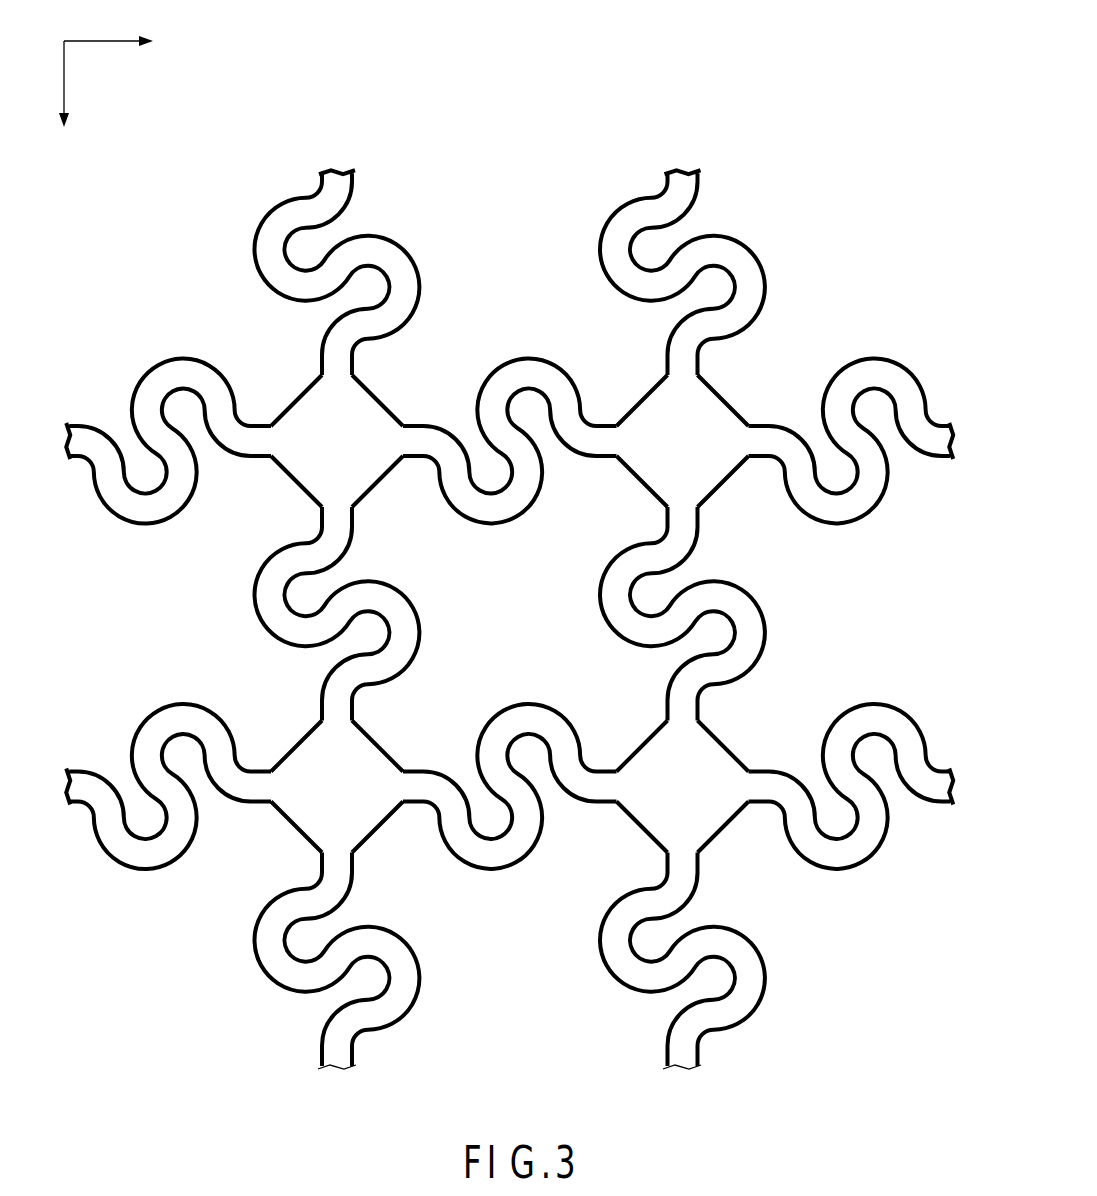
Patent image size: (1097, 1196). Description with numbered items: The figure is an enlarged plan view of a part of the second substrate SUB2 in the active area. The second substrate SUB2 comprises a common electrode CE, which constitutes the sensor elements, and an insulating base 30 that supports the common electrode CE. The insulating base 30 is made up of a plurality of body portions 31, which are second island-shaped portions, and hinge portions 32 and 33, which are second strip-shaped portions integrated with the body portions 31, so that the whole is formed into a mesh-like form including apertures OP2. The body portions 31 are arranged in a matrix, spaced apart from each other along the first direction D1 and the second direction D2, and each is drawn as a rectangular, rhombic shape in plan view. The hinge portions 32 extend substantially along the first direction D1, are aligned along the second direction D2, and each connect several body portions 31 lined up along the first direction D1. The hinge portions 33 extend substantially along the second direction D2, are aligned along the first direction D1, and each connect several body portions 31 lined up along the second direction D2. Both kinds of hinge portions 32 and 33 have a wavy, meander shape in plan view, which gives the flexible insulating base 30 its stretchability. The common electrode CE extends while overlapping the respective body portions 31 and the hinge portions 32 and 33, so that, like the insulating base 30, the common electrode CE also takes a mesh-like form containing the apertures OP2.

The second substrate SUB2 is at (702, 113).
The common electrode CE is at (509, 619).
The insulating base 30 is at (414, 253).
The body portions 31 is at (380, 481).
The hinge portions 32 is at (522, 357).
The hinge portions 33 is at (424, 600).
The apertures OP2 is at (490, 651).
The first direction D1 is at (128, 42).
The second direction D2 is at (65, 101).